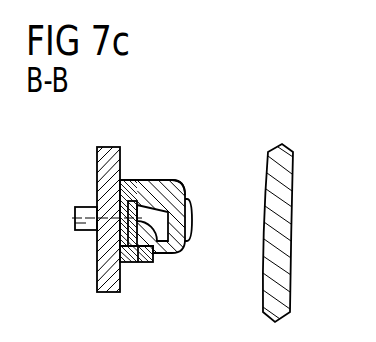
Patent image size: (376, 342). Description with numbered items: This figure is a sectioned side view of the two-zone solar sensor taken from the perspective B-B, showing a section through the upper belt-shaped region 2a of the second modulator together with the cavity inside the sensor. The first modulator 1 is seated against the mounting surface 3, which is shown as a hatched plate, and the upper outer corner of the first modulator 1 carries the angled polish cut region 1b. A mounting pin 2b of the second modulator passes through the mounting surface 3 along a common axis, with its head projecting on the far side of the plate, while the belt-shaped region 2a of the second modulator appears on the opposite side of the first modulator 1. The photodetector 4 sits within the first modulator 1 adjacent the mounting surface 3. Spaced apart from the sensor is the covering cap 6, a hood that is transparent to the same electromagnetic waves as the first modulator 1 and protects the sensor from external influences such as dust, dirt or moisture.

The first modulator 1 is at (156, 180).
The angled polish cut region of first modulator 1b is at (181, 182).
The belt-shaped region of second modulator 2a is at (191, 222).
The mounting pin of second modulator 2b is at (76, 225).
The mounting surface 3 is at (98, 162).
The photodetector 4 is at (143, 236).
The covering cap 6 is at (291, 222).